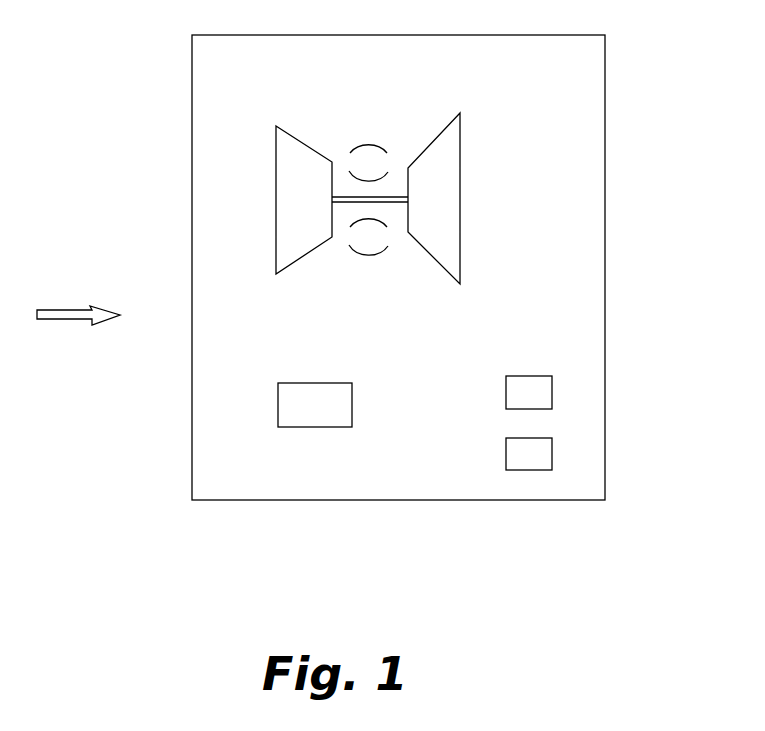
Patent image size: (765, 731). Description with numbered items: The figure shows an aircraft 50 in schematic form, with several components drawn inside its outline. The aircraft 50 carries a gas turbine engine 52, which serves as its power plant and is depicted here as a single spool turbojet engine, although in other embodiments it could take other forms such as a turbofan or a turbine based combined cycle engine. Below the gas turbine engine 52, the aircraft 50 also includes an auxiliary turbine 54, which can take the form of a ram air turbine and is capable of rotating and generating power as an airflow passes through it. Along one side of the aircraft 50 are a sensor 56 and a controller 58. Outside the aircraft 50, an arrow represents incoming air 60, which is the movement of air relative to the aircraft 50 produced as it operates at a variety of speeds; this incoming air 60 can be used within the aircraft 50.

The aircraft 50 is at (605, 65).
The gas turbine engine 52 is at (381, 88).
The auxiliary turbine 54 is at (362, 378).
The sensor 56 is at (552, 389).
The controller 58 is at (552, 450).
The incoming air 60 is at (62, 310).